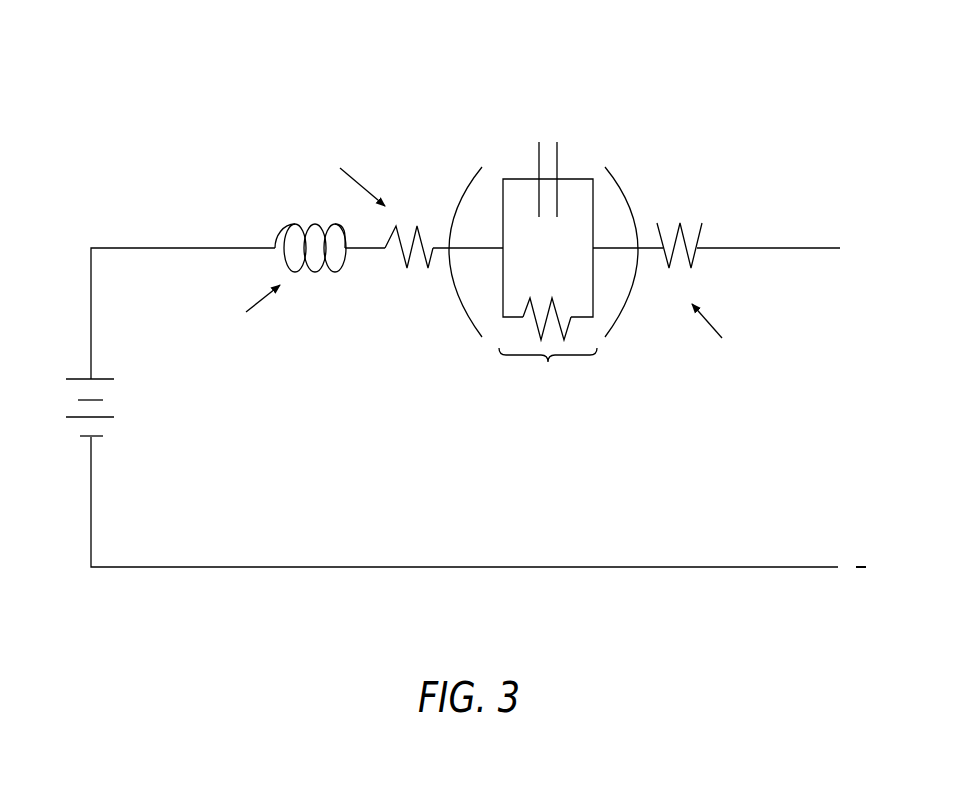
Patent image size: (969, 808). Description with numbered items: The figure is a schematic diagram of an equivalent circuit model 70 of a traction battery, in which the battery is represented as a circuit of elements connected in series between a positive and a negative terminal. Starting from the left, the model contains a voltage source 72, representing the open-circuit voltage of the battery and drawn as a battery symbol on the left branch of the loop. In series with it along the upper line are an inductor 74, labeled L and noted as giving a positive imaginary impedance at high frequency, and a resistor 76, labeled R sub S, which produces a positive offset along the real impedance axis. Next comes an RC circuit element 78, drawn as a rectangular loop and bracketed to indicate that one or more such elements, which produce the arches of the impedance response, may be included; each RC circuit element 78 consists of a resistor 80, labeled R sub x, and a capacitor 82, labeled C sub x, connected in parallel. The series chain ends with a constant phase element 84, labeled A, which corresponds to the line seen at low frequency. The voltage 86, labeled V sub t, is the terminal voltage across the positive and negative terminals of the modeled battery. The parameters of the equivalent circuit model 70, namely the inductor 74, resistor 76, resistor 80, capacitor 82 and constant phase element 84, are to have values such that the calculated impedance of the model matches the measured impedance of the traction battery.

The equivalent circuit model 70 is at (753, 78).
The voltage source 72 is at (80, 378).
The inductor 74 is at (279, 235).
The resistor 76 is at (402, 253).
The RC circuit element 78 is at (621, 180).
The resistor 80 is at (556, 313).
The capacitor 82 is at (557, 160).
The constant phase element 84 is at (702, 233).
The voltage 86 is at (816, 382).